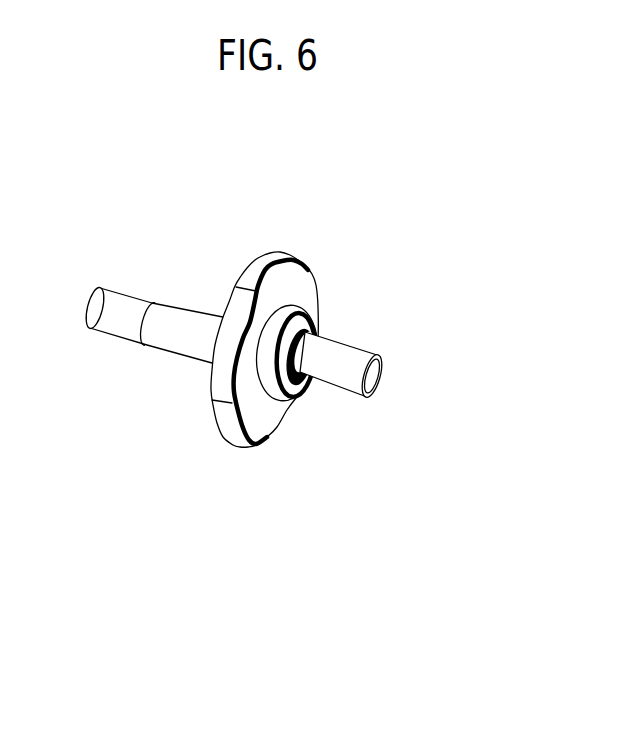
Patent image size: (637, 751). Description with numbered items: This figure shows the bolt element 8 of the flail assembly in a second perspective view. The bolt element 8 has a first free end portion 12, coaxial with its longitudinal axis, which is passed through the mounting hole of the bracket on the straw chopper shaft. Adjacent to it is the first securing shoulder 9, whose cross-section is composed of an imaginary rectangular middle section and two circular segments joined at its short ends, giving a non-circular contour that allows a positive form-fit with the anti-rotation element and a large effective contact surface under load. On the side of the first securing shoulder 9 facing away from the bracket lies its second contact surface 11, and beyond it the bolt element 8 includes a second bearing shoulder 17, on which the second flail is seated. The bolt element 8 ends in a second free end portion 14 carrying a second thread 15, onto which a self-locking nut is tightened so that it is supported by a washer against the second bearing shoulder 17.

The bolt element 8 is at (264, 417).
The first securing shoulder 9 is at (260, 258).
The second contact surface 11 is at (290, 287).
The first free end portion 12 is at (162, 343).
The second free end portion 14 is at (340, 396).
The second thread 15 is at (337, 370).
The second bearing shoulder 17 is at (315, 308).